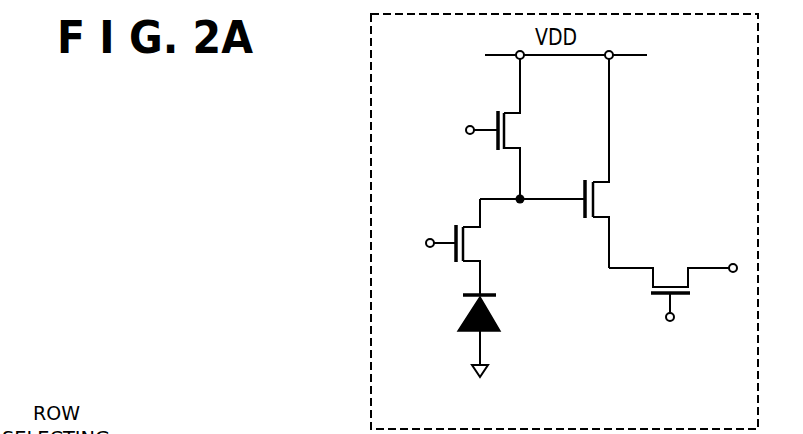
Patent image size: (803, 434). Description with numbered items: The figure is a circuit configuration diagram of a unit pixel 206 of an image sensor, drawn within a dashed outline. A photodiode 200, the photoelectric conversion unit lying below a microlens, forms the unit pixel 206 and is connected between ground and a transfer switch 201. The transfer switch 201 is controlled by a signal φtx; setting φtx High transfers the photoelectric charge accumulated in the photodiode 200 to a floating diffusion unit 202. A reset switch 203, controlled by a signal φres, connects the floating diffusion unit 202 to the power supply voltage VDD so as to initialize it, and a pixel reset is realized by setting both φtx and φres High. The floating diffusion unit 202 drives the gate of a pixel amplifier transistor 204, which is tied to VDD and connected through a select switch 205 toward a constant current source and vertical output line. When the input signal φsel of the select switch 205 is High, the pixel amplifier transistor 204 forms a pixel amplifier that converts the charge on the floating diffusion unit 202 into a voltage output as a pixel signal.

The photodiode 200 is at (499, 328).
The transfer switch 201 is at (455, 229).
The floating diffusion unit 202 is at (521, 204).
The reset switch 203 is at (496, 119).
The pixel amplifier transistor 204 is at (583, 184).
The select switch 205 is at (685, 296).
The unit pixel 206 is at (371, 43).